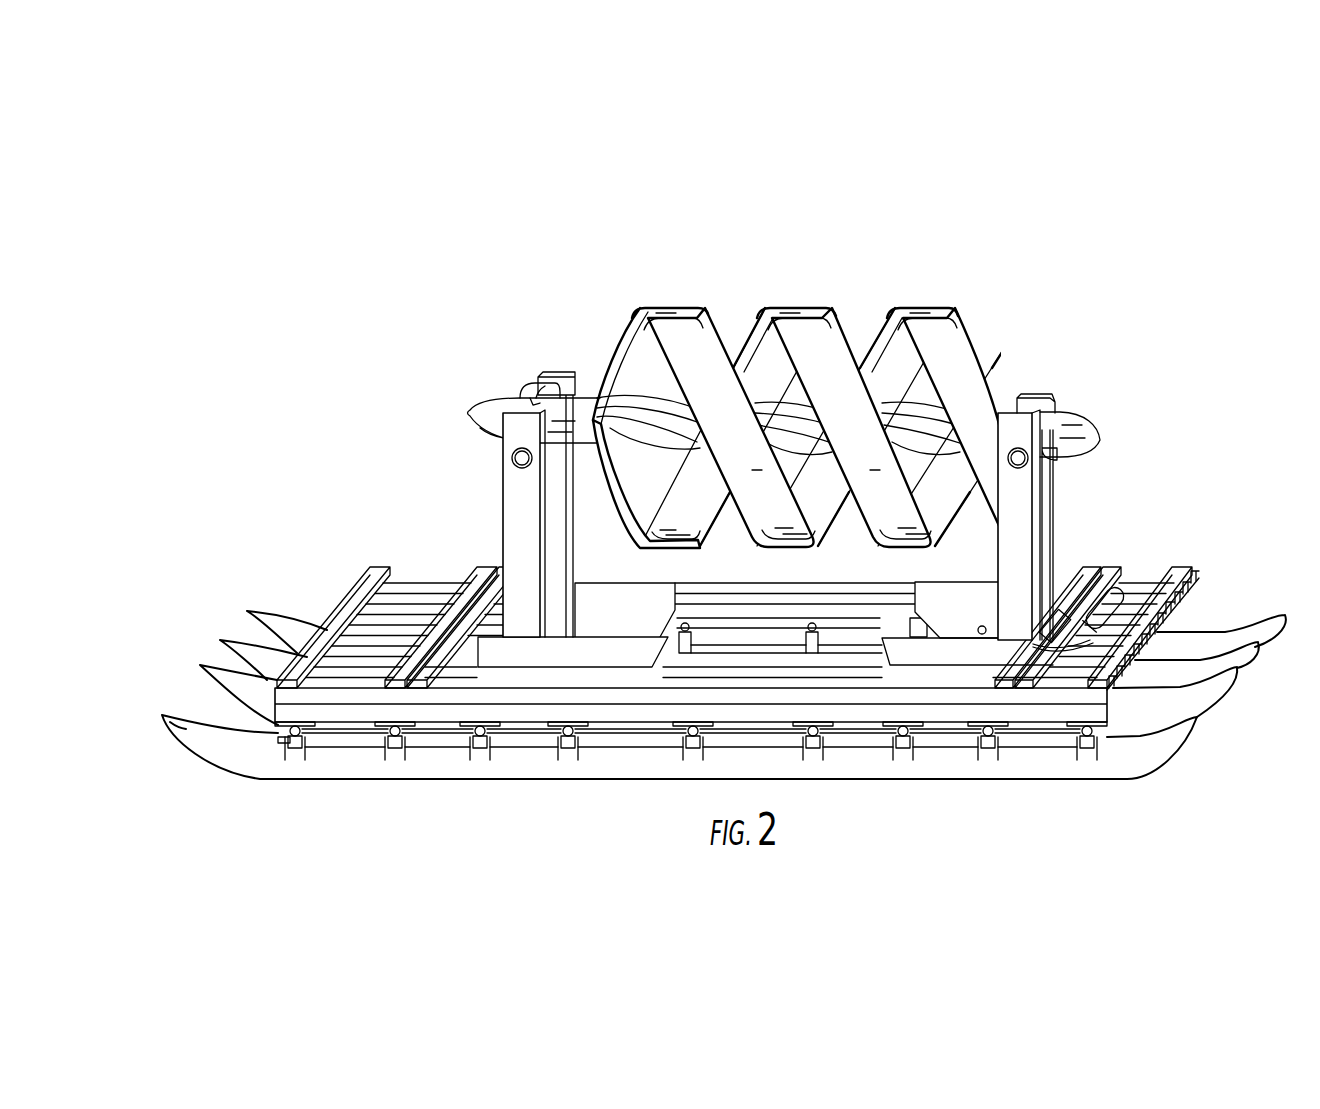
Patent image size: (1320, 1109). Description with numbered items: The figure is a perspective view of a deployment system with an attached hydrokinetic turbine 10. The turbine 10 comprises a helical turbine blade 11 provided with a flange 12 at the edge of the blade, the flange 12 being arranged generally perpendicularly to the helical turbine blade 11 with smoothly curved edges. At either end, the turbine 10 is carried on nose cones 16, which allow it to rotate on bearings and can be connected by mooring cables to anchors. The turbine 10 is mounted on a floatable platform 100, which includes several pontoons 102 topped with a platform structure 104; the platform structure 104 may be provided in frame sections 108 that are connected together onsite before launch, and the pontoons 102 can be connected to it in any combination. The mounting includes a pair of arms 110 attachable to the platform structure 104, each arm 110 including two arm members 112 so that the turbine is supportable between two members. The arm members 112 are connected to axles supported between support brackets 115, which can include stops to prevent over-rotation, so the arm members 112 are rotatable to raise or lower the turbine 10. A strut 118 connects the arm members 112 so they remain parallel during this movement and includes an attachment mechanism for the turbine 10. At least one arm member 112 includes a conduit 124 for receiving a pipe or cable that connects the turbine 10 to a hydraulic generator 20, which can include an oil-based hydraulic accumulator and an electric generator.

The turbine 10 is at (888, 256).
The helical turbine blade 11 is at (950, 373).
The flange 12 is at (822, 328).
The nose cone 16 is at (1076, 432).
The hydraulic generator 20 is at (1118, 607).
The floatable platform 100 is at (1170, 758).
The pontoons 102 is at (162, 715).
The platform structure 104 is at (1090, 690).
The frame sections 108 is at (380, 576).
The arms 110 is at (1058, 487).
The arm members 112 is at (567, 373).
The support brackets 115 is at (601, 616).
The strut 118 is at (531, 398).
The conduit 124 is at (1058, 620).